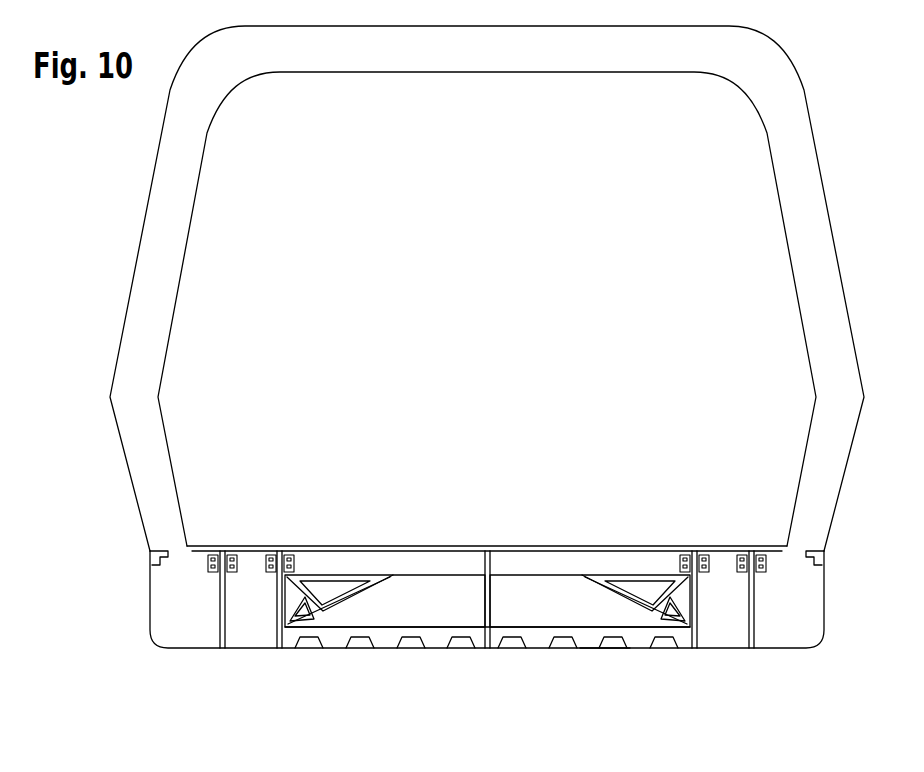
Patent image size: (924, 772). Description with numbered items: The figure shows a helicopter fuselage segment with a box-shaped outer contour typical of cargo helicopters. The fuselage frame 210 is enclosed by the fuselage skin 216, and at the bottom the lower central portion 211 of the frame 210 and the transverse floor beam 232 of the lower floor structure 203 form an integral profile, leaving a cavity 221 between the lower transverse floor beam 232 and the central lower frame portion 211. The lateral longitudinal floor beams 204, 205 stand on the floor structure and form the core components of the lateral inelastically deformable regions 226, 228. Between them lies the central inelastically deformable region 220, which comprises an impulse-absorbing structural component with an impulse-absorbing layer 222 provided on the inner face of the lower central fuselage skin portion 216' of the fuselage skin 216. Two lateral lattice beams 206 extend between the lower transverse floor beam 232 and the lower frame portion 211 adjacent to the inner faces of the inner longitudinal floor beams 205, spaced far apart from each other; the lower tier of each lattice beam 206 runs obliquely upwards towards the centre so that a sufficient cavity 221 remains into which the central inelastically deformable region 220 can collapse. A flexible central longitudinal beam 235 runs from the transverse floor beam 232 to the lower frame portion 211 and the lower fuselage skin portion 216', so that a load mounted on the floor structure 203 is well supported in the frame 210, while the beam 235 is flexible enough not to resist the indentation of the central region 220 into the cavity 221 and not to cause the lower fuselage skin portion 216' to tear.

The lower floor structure 203 is at (508, 533).
The lateral longitudinal floor beam 204 is at (218, 623).
The inner longitudinal floor beam 205 is at (282, 630).
The lateral lattice beam 206 is at (341, 572).
The frame 210 is at (157, 449).
The lower central portion of the frame 211 is at (418, 637).
The fuselage skin 216 is at (515, 337).
The lower central fuselage skin portion 216' is at (593, 684).
The central inelastically deformable region 220 is at (495, 675).
The cavity 221 is at (560, 586).
The impulse-absorbing layer 222 is at (558, 628).
The lateral inelastically deformable region 226 is at (246, 670).
The lateral inelastically deformable region 228 is at (729, 675).
The transverse floor beam 232 is at (418, 560).
The flexible central longitudinal beam 235 is at (480, 622).